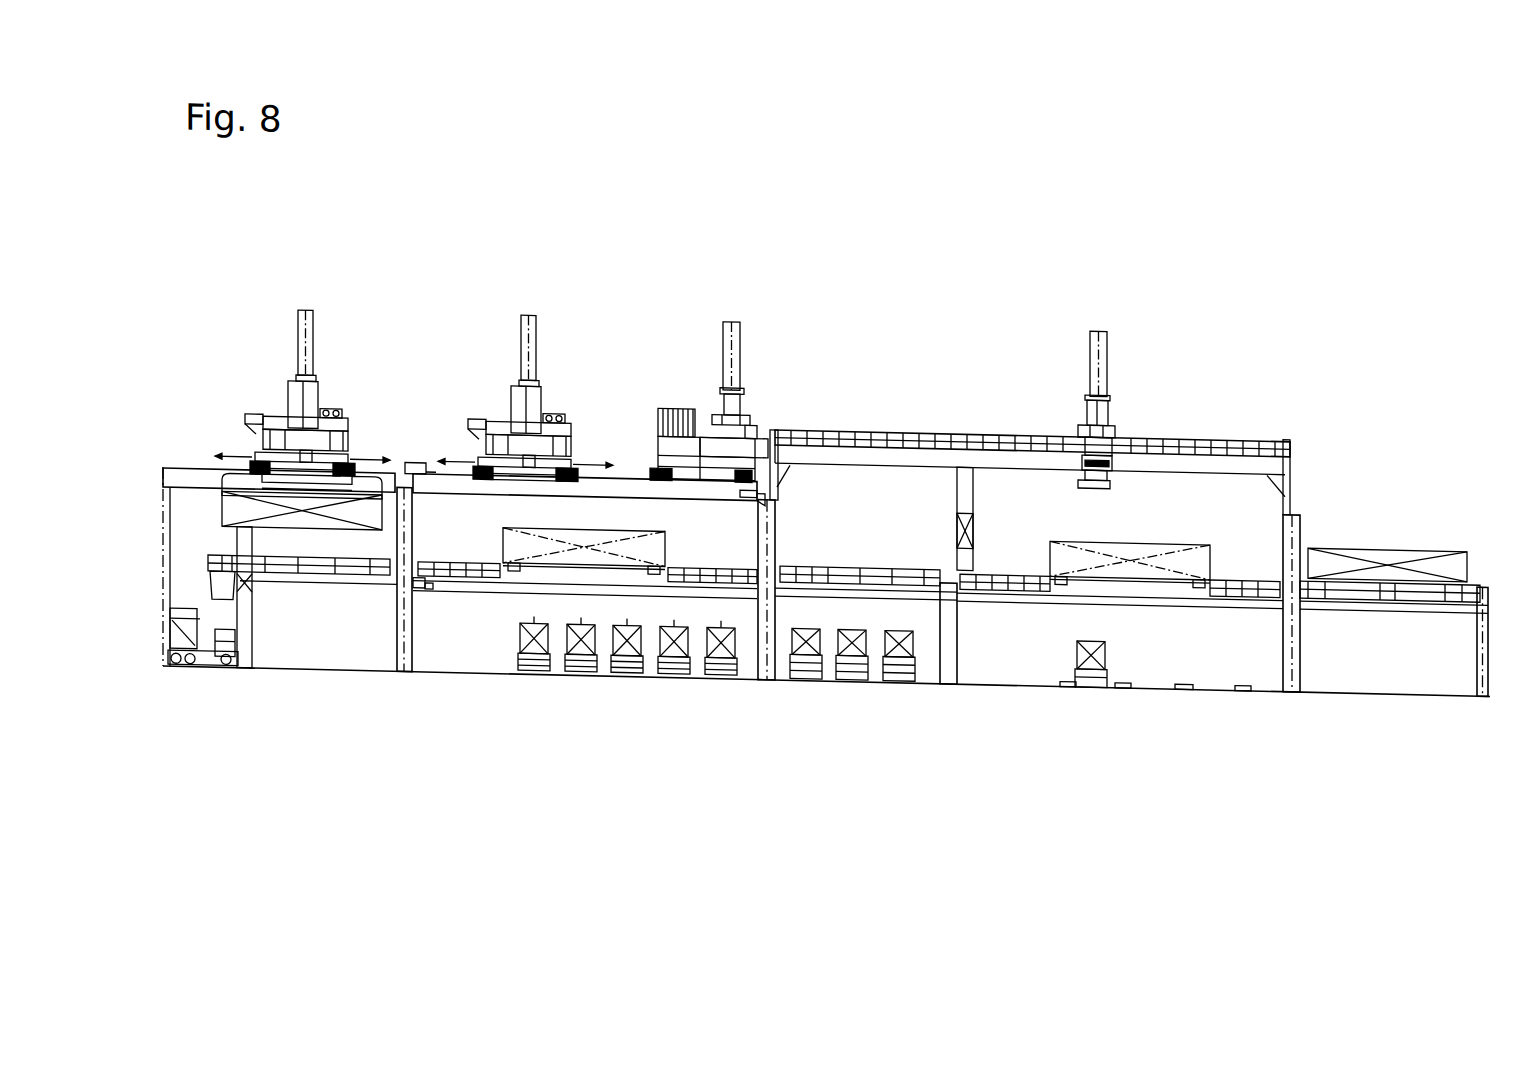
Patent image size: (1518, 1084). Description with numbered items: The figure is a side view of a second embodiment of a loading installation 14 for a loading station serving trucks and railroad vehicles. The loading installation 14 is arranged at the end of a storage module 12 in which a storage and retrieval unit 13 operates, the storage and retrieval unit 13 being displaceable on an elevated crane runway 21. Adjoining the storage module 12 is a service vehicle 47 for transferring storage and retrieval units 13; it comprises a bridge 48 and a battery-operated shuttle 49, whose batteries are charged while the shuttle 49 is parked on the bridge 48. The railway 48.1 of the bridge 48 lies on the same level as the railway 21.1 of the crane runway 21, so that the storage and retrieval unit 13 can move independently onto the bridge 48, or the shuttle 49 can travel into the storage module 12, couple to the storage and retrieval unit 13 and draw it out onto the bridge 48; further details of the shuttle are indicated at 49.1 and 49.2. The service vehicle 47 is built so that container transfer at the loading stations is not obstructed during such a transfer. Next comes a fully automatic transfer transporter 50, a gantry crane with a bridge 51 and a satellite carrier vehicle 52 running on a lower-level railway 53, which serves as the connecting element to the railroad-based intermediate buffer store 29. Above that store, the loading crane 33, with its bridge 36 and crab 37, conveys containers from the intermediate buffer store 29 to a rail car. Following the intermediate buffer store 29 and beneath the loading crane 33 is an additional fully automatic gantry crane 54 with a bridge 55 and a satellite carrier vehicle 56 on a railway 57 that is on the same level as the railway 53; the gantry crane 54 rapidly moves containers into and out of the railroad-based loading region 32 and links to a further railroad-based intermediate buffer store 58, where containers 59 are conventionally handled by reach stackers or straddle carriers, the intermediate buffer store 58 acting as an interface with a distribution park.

The storage module 12 is at (165, 672).
The storage and retrieval unit 13 is at (350, 424).
The loading installation 14 is at (860, 246).
The crane runway 21 is at (195, 474).
The railway of the crane runway 21.1 is at (232, 470).
The intermediate buffer store 29 is at (917, 563).
The railroad-based loading region 32 is at (1016, 673).
The loading crane 33 is at (1182, 410).
The bridge 36 is at (1003, 436).
The crab 37 is at (1088, 417).
The service vehicle 47 is at (427, 449).
The bridge 48 is at (625, 476).
The railway of the bridge 48.1 is at (582, 465).
The shuttle 49 is at (682, 448).
The housing extension 49.1 is at (768, 426).
The spindle rod 49.2 is at (722, 430).
The transfer transporter 50 is at (470, 583).
The bridge 51 is at (432, 581).
The satellite carrier vehicle 52 is at (524, 567).
The railway 53 is at (395, 585).
The gantry crane 54 is at (1173, 585).
The bridge 55 is at (1233, 578).
The satellite carrier vehicle 56 is at (1140, 563).
The railway 57 is at (960, 597).
The intermediate buffer store 58 is at (1408, 566).
The containers 59 is at (1358, 541).